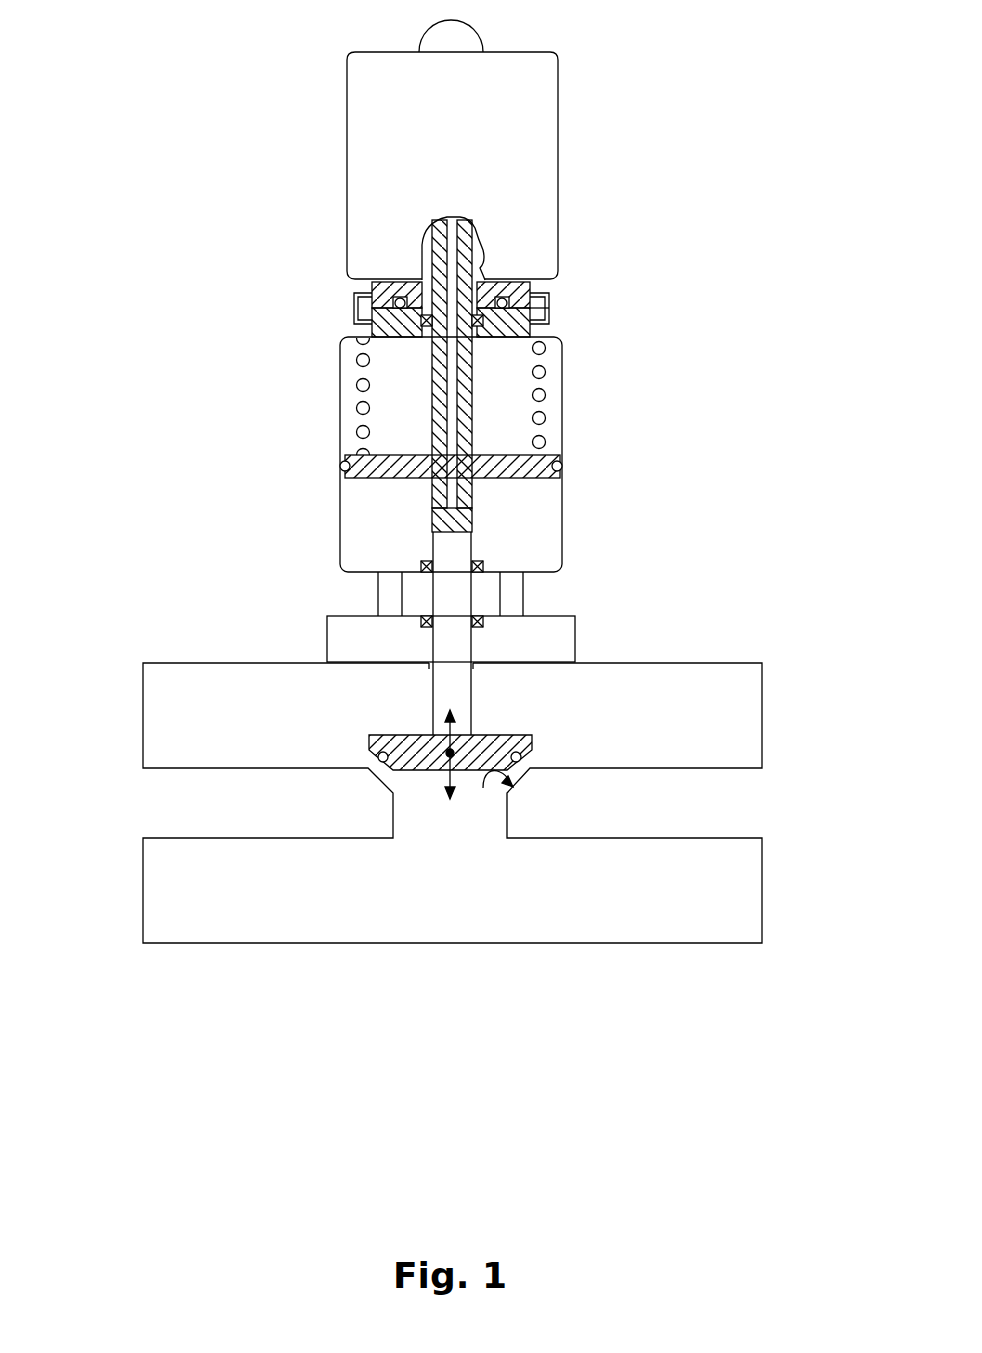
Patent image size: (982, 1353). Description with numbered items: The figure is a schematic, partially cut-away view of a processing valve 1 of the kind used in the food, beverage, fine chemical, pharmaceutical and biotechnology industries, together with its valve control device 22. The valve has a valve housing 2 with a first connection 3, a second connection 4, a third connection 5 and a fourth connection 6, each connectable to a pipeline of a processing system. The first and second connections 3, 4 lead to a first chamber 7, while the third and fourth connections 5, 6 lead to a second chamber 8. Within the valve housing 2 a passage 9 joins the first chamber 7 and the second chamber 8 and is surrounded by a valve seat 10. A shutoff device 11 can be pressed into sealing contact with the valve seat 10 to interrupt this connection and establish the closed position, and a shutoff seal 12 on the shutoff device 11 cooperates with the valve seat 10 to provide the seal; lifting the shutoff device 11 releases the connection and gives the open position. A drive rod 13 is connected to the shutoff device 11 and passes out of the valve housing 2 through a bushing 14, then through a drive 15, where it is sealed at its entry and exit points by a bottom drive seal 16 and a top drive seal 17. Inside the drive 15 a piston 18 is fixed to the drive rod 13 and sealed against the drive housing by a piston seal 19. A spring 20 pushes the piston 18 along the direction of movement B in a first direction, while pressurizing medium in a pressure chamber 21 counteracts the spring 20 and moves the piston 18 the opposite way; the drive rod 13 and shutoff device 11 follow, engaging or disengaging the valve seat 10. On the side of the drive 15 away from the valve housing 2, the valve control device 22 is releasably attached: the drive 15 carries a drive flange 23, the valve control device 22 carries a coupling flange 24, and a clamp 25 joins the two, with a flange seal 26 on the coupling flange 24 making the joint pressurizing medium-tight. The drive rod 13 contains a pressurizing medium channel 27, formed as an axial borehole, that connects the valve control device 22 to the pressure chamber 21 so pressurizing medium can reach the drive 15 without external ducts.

The processing valve 1 is at (148, 548).
The valve housing 2 is at (578, 617).
The first connection 3 is at (158, 731).
The second connection 4 is at (743, 715).
The third connection 5 is at (156, 877).
The fourth connection 6 is at (733, 868).
The first chamber 7 is at (406, 710).
The second chamber 8 is at (406, 903).
The passage 9 is at (453, 823).
The valve seat 10 is at (516, 760).
The shutoff device 11 is at (423, 763).
The shutoff seal 12 is at (385, 760).
The drive rod 13 is at (470, 522).
The bushing 14 is at (418, 626).
The drive 15 is at (340, 360).
The bottom drive seal 16 is at (420, 566).
The top drive seal 17 is at (370, 333).
The piston 18 is at (385, 462).
The piston seal 19 is at (345, 467).
The spring 20 is at (545, 418).
The pressure chamber 21 is at (381, 545).
The valve control device 22 is at (357, 212).
The drive flange 23 is at (549, 322).
The coupling flange 24 is at (549, 294).
The clamp 25 is at (552, 310).
The flange seal 26 is at (356, 296).
The pressurizing medium channel 27 is at (440, 503).
The direction of movement B is at (455, 752).